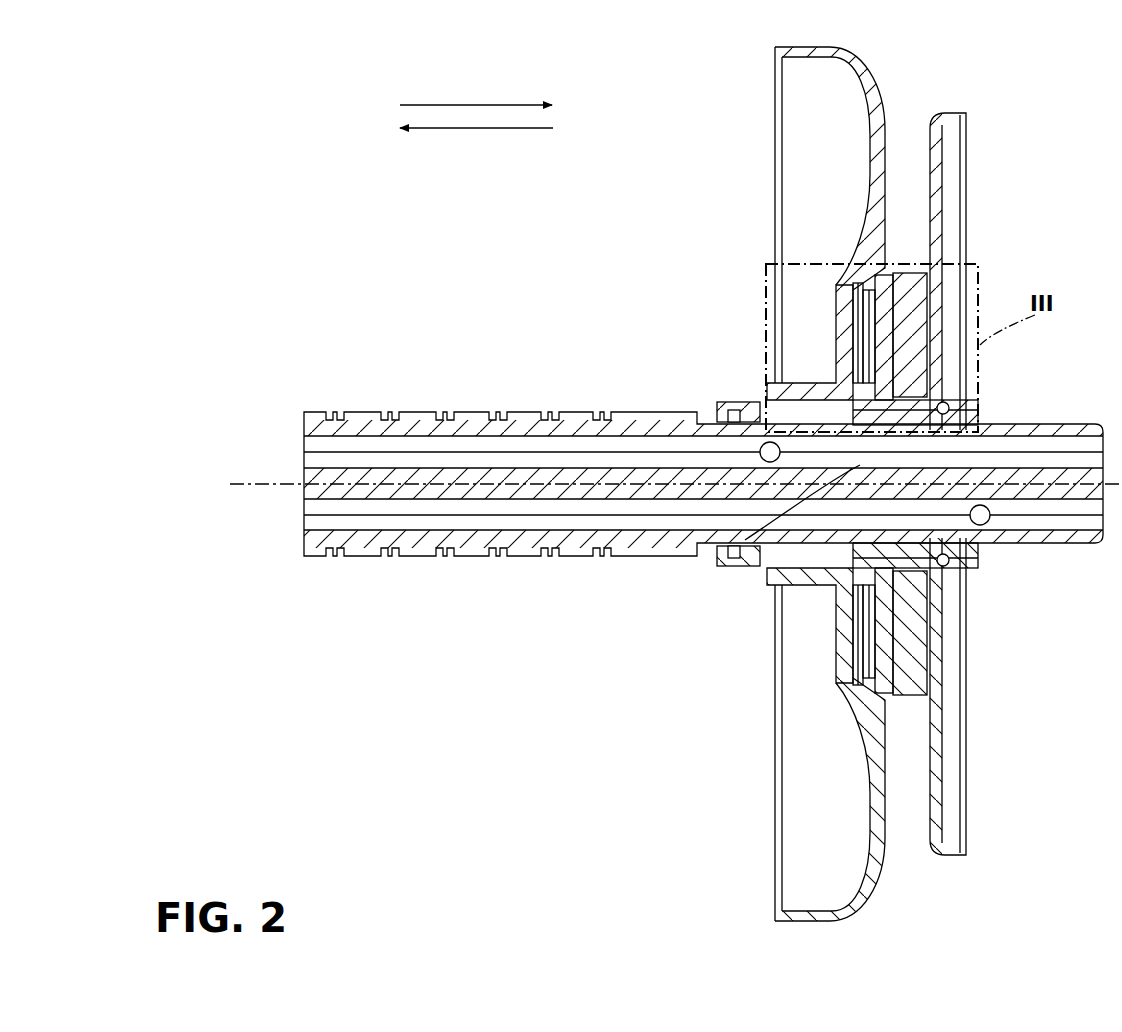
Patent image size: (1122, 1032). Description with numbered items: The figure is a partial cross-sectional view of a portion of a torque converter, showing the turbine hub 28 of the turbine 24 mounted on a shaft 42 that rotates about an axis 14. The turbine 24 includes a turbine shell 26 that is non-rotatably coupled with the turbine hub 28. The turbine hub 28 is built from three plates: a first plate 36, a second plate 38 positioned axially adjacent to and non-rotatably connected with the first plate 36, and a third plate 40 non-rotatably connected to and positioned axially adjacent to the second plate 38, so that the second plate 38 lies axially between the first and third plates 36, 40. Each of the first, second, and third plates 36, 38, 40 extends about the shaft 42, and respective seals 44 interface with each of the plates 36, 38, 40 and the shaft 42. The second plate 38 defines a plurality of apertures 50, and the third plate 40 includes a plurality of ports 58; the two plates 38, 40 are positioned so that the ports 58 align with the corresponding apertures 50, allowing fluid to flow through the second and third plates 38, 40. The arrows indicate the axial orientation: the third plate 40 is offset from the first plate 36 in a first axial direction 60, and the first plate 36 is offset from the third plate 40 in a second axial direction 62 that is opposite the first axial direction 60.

The axis 14 is at (270, 484).
The turbine 24 is at (860, 68).
The turbine shell 26 is at (865, 88).
The turbine hub 28 is at (828, 350).
The first plate 36 is at (840, 322).
The second plate 38 is at (940, 205).
The third plate 40 is at (985, 418).
The shaft 42 is at (663, 420).
The seals 44 is at (740, 412).
The apertures 50 is at (867, 318).
The ports 58 is at (890, 313).
The first axial direction 60 is at (497, 105).
The second axial direction 62 is at (510, 128).